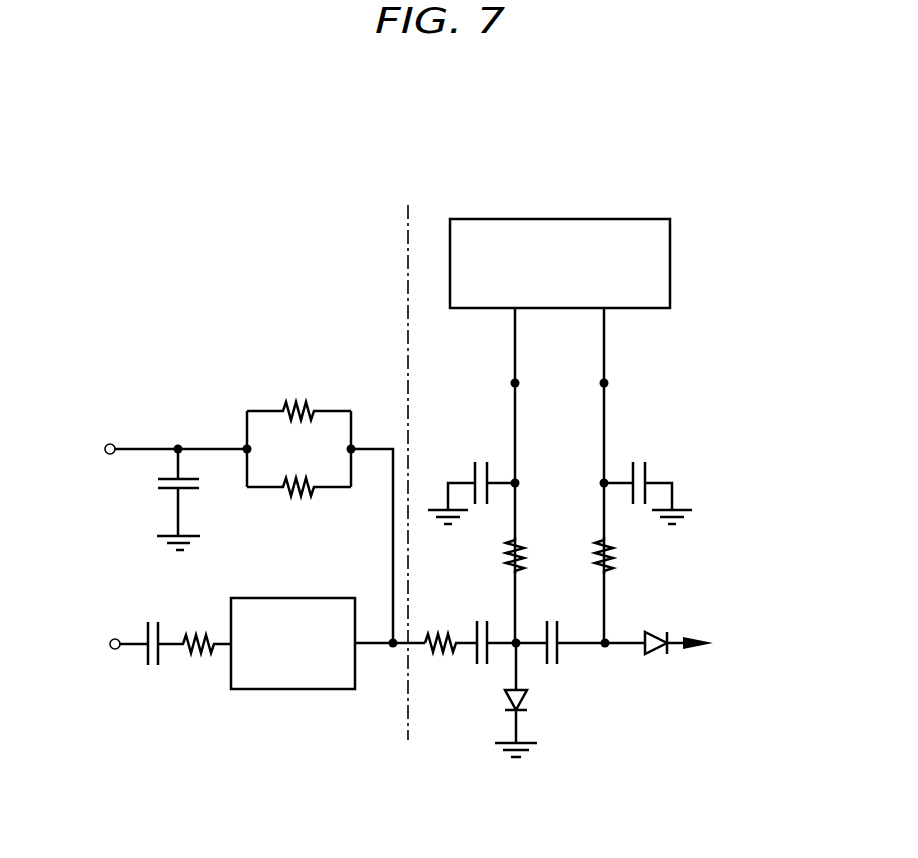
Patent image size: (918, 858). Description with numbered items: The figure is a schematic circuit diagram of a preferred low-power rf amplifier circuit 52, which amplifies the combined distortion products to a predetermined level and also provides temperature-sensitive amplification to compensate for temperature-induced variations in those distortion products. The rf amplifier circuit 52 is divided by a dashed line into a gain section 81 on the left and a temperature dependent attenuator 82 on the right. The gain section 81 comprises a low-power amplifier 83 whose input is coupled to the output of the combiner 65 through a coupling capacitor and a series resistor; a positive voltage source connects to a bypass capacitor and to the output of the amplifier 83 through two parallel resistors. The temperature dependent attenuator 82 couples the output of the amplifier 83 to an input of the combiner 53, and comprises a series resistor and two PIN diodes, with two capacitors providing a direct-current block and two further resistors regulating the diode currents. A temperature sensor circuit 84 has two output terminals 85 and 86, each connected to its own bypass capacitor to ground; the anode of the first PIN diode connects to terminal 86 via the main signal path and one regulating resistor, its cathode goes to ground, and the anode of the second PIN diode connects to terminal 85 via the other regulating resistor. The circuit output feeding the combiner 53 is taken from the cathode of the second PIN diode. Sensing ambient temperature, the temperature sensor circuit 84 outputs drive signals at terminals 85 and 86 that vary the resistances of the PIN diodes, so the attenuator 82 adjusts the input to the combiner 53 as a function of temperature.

The rf amplifier circuit 52 is at (335, 208).
The combiner 53 is at (785, 689).
The combiner 65 is at (69, 684).
The gain section 81 is at (241, 340).
The temperature dependent attenuator 82 is at (570, 199).
The low-power amplifier 83 is at (286, 690).
The temperature sensor circuit 84 is at (670, 253).
The output terminal 85 is at (607, 384).
The output terminal 86 is at (512, 383).